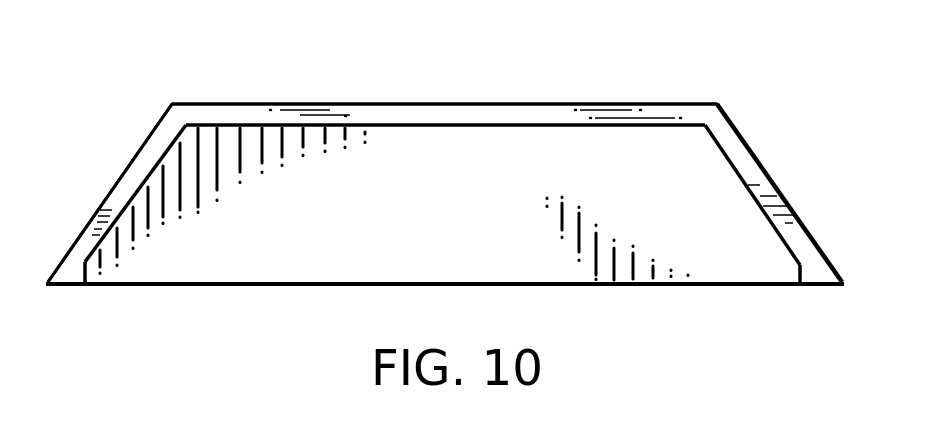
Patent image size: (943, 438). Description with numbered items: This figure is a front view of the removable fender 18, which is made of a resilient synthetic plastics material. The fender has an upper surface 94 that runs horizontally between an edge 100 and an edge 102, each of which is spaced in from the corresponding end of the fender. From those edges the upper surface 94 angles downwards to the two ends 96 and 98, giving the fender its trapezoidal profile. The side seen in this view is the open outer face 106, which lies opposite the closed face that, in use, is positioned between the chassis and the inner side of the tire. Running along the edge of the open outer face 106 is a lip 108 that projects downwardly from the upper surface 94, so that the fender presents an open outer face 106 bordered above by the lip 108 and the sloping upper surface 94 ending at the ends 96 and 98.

The fender 18 is at (449, 96).
The upper surface 94 is at (358, 103).
The end 96 is at (47, 278).
The end 98 is at (850, 281).
The edge 100 is at (172, 101).
The edge 102 is at (720, 102).
The open outer face 106 is at (312, 249).
The lip 108 is at (498, 134).